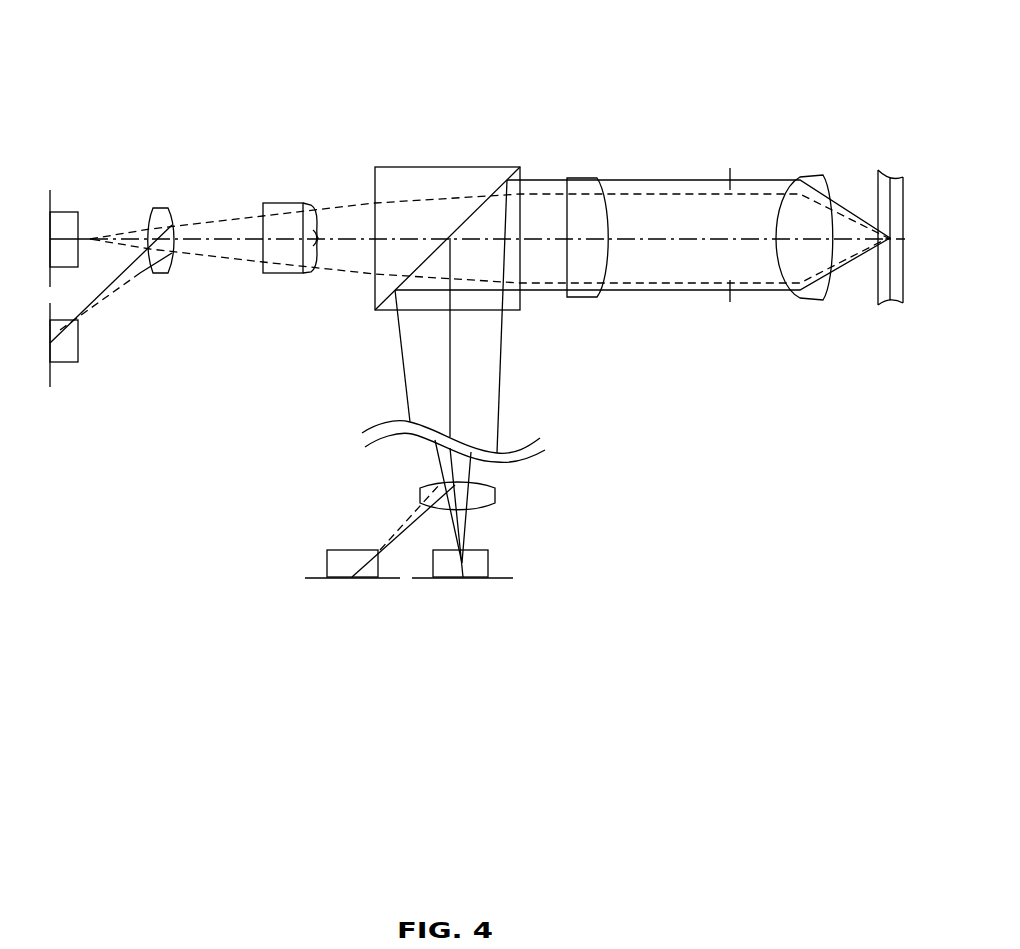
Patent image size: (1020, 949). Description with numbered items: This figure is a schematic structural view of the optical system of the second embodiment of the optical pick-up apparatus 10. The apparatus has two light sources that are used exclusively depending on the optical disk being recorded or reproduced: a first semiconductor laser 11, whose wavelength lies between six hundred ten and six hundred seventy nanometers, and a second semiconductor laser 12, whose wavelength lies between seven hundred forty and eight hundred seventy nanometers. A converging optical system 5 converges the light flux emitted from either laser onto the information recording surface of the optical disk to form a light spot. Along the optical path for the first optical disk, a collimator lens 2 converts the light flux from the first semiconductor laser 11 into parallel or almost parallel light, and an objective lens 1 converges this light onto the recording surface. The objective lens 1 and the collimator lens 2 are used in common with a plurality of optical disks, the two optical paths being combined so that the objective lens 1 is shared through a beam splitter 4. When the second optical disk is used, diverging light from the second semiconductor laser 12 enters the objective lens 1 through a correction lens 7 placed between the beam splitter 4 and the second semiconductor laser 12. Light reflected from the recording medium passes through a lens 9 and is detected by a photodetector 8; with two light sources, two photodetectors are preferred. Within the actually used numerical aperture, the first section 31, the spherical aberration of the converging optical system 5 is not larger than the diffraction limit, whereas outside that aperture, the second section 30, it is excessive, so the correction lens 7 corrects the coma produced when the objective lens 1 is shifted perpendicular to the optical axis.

The objective lens 1 is at (818, 175).
The collimator lens 2 is at (582, 178).
The beam splitter 4 is at (407, 167).
The converging optical system 5 is at (358, 318).
The correction lens 7 is at (283, 203).
The photodetector 8 is at (78, 358).
The lens 9 is at (158, 208).
The optical pick-up apparatus 10 is at (478, 115).
The first semiconductor laser 11 is at (490, 563).
The second semiconductor laser 12 is at (68, 212).
The second section 30 is at (302, 203).
The first section 31 is at (318, 255).